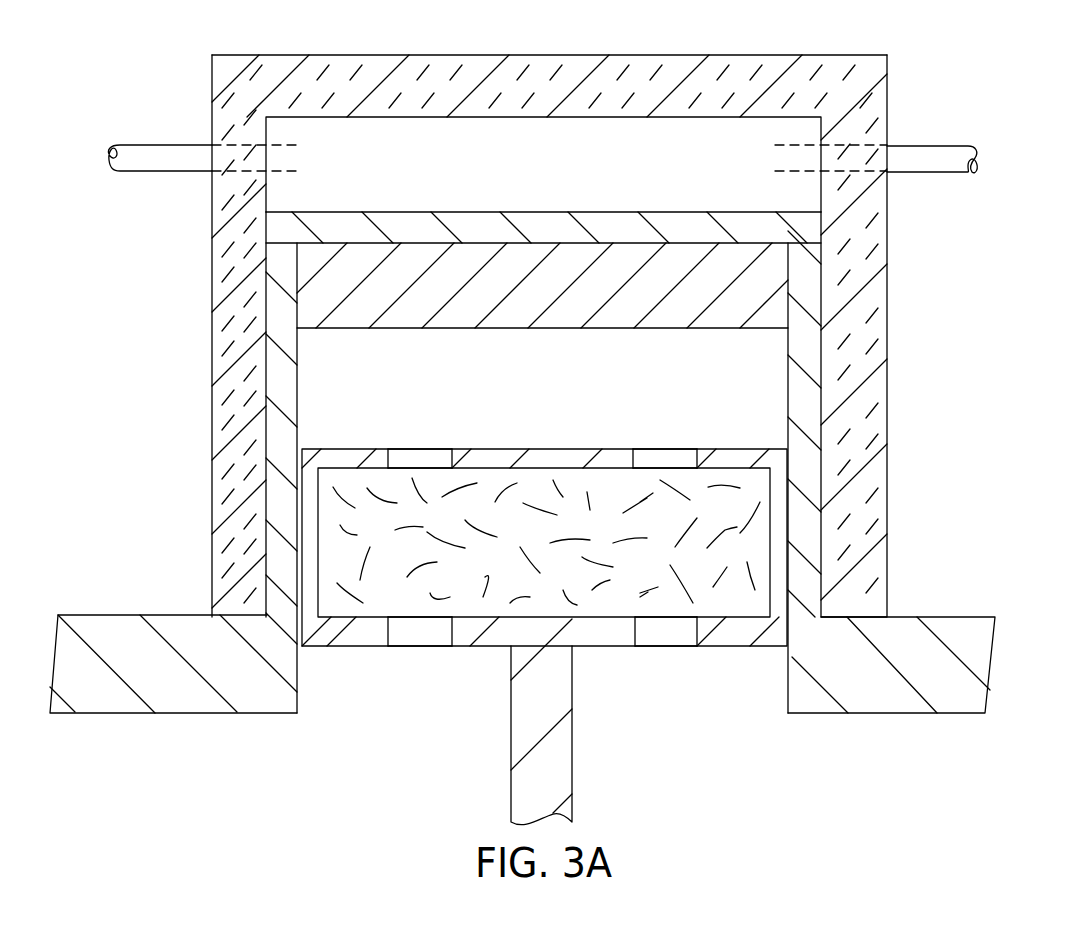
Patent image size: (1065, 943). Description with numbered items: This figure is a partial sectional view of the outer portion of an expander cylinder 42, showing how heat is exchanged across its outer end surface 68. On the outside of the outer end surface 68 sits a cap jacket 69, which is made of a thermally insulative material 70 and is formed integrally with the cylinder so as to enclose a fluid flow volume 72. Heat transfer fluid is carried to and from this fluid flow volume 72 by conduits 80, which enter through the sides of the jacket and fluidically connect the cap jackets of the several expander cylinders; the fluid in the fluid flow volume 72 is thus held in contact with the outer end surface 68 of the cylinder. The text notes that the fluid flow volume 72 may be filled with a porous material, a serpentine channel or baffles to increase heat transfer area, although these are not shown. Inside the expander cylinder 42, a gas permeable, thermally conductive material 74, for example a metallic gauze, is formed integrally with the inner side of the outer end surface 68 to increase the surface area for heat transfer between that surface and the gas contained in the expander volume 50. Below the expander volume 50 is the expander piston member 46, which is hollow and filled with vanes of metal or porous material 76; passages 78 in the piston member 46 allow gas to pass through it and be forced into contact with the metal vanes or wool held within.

The expander cylinder 42 is at (795, 590).
The expander piston member 46 is at (779, 515).
The expander volume 50 is at (736, 395).
The outer end surface 68 is at (563, 212).
The cap jacket 69 is at (382, 55).
The thermally insulative material 70 is at (575, 68).
The fluid flow volume 72 is at (720, 117).
The gas permeable, thermally conductive material 74 is at (772, 302).
The vanes of metal or porous material 76 is at (668, 587).
The passages 78 is at (415, 449).
The conduits 80 is at (125, 143).